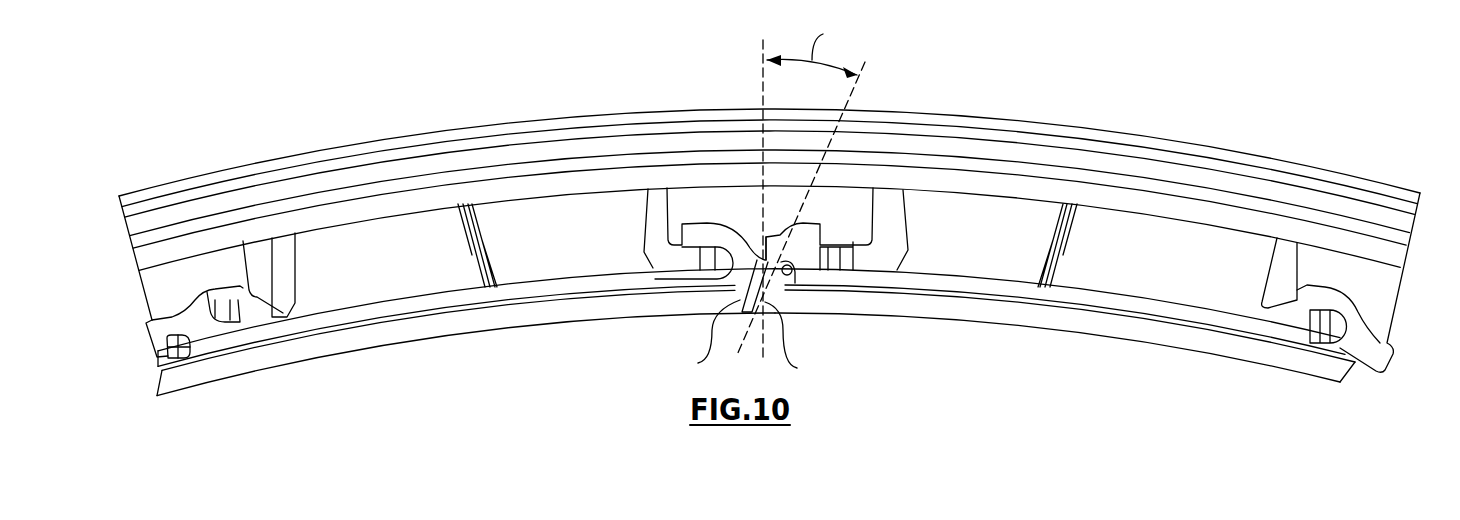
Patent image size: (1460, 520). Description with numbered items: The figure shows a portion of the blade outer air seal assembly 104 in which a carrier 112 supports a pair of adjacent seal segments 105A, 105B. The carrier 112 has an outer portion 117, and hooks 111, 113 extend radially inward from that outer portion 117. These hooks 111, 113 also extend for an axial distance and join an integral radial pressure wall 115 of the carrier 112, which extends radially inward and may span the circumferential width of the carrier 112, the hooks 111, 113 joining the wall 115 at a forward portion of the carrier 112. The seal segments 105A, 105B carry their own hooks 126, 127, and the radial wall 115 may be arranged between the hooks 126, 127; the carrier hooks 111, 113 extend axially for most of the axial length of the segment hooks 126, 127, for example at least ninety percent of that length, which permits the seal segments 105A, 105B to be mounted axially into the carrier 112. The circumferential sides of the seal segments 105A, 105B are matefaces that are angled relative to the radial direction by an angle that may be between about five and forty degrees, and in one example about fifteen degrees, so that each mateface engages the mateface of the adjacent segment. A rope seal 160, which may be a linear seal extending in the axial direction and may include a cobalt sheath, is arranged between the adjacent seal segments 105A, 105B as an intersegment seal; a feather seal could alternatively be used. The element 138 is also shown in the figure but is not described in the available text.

The BOAS assembly 104 is at (1334, 142).
The seal segment 105A is at (540, 312).
The seal segment 105B is at (1088, 313).
The hook 111 is at (270, 292).
The carrier 112 is at (700, 120).
The hook 113 is at (657, 247).
The radial pressure wall 115 is at (162, 278).
The outer portion 117 is at (133, 238).
The hook 126 is at (232, 295).
The hook 127 is at (690, 237).
The inner band 138 is at (478, 300).
The rope seal 160 is at (790, 272).